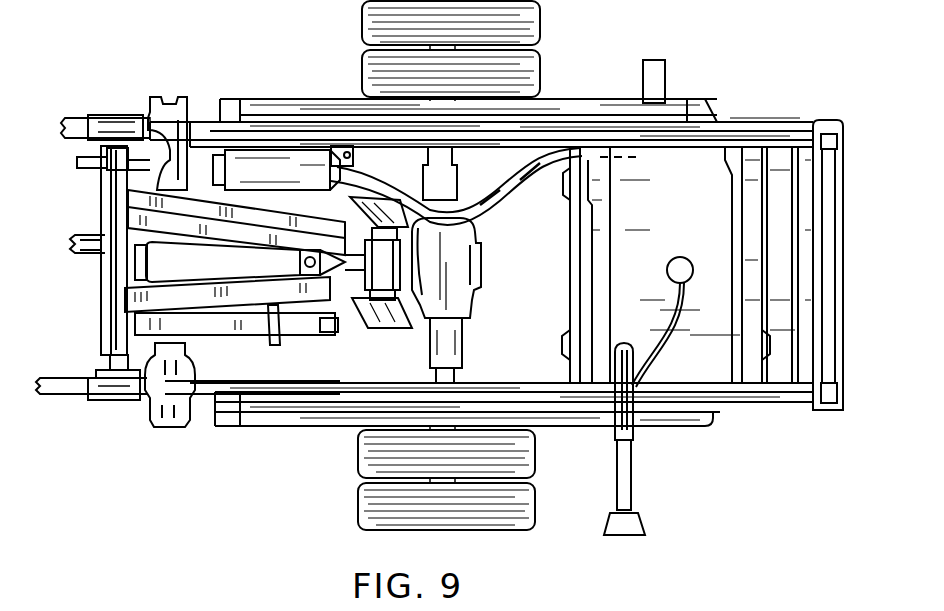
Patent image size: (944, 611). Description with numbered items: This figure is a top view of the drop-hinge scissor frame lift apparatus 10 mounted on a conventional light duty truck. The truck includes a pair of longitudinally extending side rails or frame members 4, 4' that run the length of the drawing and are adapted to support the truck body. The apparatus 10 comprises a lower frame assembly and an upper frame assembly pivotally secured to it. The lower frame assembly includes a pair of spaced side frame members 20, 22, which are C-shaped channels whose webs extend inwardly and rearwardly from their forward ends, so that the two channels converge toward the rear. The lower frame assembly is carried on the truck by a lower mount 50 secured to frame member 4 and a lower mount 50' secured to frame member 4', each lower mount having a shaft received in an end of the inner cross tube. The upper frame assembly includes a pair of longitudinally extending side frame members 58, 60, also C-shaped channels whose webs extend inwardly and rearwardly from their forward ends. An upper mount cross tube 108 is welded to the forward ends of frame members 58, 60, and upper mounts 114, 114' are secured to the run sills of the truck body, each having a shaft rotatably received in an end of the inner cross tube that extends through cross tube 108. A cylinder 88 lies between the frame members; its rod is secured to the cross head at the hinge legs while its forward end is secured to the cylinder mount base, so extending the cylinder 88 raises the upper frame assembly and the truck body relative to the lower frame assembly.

The drop-hinge scissor frame lift apparatus 10 is at (287, 88).
The lower mount 50' is at (105, 98).
The upper mount 114' is at (126, 99).
The side rail or frame member 4' is at (245, 99).
The side frame member 60 is at (283, 230).
The side frame member 22 is at (334, 203).
The cylinder 88 is at (188, 272).
The upper mount cross tube 108 is at (118, 263).
The side frame member 58 is at (310, 307).
The side frame member 20 is at (335, 330).
The lower mount 50 is at (91, 416).
The upper mount 114 is at (116, 418).
The side rail or frame member 4 is at (252, 422).